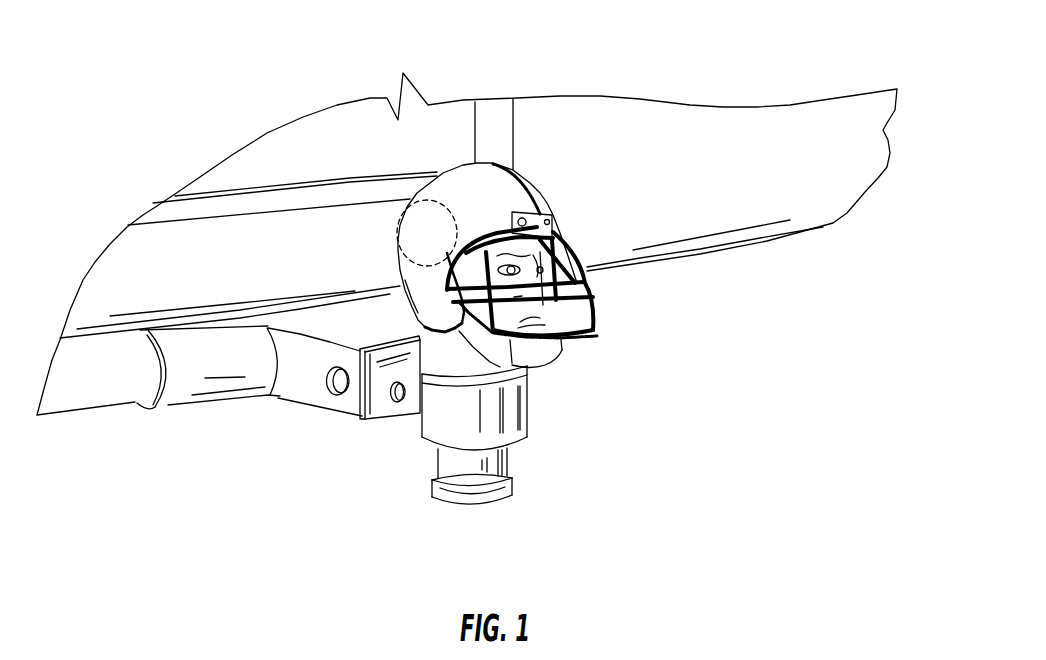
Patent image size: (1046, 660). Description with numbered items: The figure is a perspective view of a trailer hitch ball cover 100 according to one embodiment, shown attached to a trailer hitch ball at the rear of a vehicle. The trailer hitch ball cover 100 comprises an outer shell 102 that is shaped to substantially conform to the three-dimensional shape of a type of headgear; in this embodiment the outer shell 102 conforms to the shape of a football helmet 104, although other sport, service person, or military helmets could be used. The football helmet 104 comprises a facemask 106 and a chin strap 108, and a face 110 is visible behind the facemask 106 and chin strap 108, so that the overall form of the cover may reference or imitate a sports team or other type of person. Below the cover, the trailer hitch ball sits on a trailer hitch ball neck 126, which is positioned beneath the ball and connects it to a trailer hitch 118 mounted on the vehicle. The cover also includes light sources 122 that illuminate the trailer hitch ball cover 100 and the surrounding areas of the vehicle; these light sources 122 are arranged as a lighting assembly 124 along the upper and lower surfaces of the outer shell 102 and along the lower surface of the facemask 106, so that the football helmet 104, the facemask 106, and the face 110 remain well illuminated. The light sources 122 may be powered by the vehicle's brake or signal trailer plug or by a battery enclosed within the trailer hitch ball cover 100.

The trailer hitch ball cover 100 is at (467, 214).
The outer shell 102 is at (460, 168).
The football helmet 104 is at (366, 160).
The facemask 106 is at (616, 320).
The chin strap 108 is at (612, 376).
The face 110 is at (580, 256).
The trailer hitch 118 is at (520, 456).
The light sources 122 is at (289, 425).
The lighting assembly 124 is at (404, 434).
The trailer hitch ball neck 126 is at (581, 419).